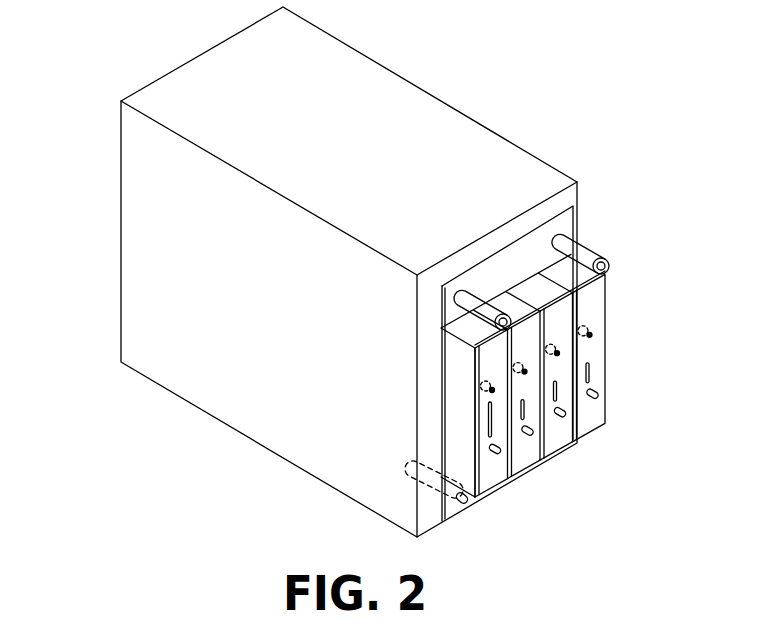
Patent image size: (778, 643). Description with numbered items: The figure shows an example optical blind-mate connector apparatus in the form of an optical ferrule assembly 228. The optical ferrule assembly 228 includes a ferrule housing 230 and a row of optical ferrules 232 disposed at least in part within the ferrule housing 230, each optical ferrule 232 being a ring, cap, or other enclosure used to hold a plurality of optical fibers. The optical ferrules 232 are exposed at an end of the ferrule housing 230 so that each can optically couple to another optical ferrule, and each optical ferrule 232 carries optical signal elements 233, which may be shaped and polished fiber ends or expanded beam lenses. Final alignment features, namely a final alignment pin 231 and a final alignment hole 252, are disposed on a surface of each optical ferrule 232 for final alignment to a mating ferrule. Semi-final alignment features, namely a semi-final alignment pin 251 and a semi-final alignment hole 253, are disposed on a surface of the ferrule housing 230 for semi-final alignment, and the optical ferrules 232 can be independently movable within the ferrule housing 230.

The optical ferrule assembly 228 is at (95, 232).
The ferrule housing 230 is at (237, 383).
The final alignment pin 231 is at (602, 393).
The optical ferrule 232 is at (606, 326).
The optical signal element 233 is at (592, 375).
The semi-final alignment pin 251 is at (608, 258).
The final alignment hole 252 is at (488, 394).
The semi-final alignment hole 253 is at (466, 512).